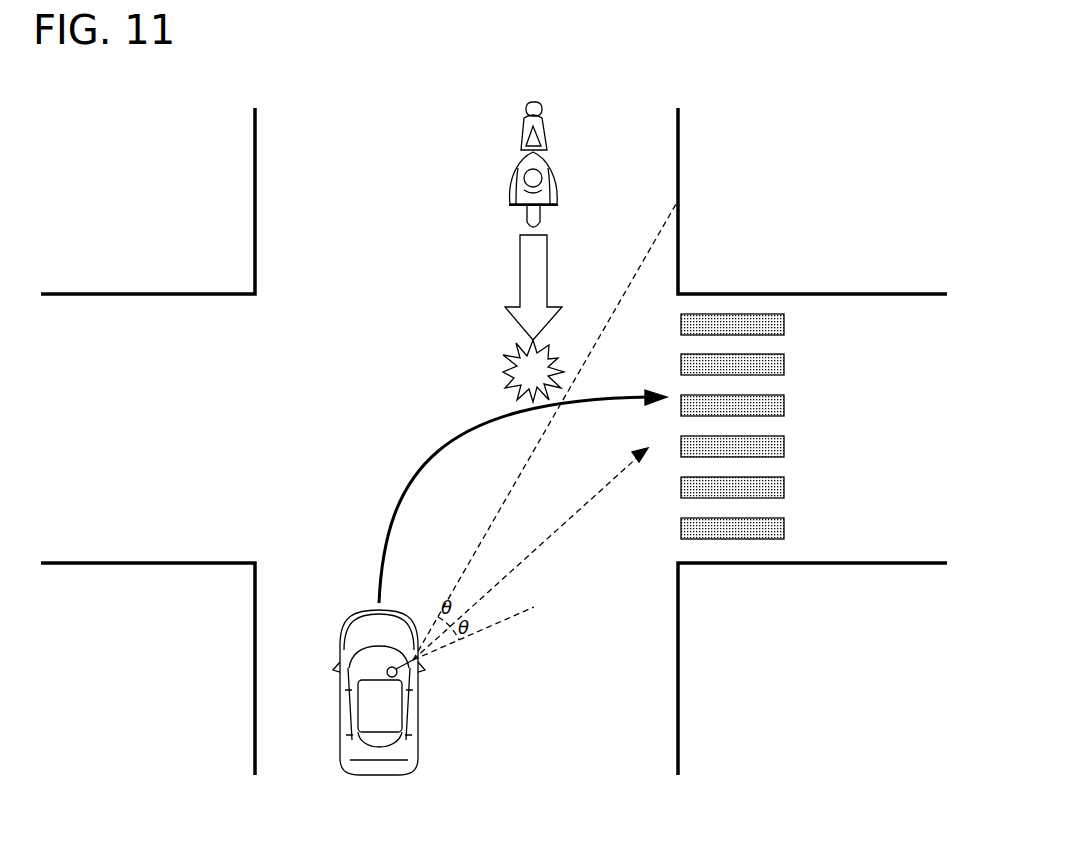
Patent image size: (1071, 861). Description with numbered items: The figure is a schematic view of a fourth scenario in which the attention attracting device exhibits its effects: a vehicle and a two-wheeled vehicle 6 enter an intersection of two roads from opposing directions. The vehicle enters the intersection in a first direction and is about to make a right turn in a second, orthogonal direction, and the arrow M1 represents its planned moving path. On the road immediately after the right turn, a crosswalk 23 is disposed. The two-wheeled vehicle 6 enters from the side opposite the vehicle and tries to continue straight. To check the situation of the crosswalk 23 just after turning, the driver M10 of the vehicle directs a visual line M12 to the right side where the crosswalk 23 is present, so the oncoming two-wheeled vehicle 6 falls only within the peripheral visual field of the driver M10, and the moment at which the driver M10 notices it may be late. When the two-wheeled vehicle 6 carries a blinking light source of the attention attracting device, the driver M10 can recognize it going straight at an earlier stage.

The other vehicle (motorcycle) 6 is at (533, 228).
The crosswalk 23 is at (735, 314).
The moving path M1 is at (397, 497).
The driver M10 is at (392, 670).
The visual line M12 is at (553, 532).